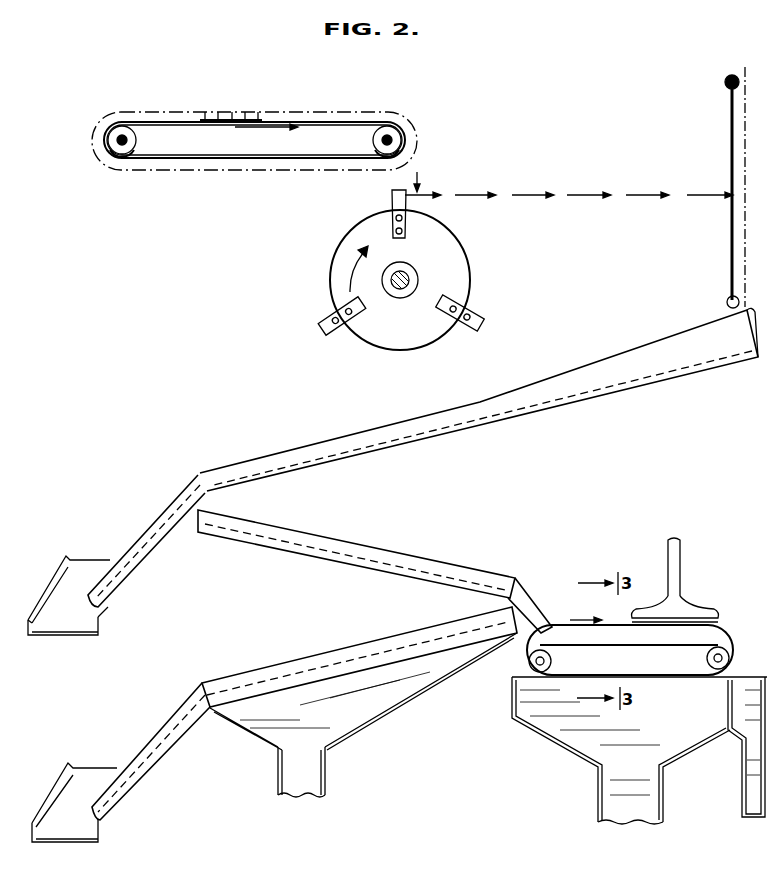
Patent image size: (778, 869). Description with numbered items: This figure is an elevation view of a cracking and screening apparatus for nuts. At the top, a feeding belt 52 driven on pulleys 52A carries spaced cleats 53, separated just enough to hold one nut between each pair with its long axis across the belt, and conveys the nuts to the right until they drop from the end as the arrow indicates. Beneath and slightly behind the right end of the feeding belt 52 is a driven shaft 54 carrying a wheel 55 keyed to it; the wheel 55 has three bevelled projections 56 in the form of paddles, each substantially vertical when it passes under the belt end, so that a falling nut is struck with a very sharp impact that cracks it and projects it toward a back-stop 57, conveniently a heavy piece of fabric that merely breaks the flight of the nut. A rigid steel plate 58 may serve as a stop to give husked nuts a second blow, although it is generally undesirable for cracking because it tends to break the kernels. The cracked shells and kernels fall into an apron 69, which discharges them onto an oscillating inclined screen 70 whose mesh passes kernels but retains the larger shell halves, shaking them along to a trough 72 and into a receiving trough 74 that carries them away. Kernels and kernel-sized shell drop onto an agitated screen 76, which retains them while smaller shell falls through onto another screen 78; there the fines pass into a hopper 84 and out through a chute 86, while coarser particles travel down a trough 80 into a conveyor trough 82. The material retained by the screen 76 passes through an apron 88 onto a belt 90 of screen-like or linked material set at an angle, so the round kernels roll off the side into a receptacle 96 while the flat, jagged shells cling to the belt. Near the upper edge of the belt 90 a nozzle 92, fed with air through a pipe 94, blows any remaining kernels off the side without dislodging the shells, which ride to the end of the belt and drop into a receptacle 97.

The feeding belt 52 is at (160, 167).
The pulleys 52A is at (136, 141).
The cleats 53 is at (258, 112).
The driven shaft 54 is at (412, 281).
The wheel 55 is at (466, 269).
The projections 56 is at (392, 207).
The back-stop 57 is at (730, 152).
The steel plate 58 is at (745, 67).
The apron 69 is at (617, 384).
The screen 70 is at (431, 437).
The trough 72 is at (146, 545).
The receiving trough 74 is at (108, 621).
The screen 76 is at (298, 554).
The screen 78 is at (273, 672).
The trough 80 is at (155, 752).
The conveyor trough 82 is at (108, 829).
The hopper 84 is at (366, 721).
The chute 86 is at (328, 794).
The apron 88 is at (528, 596).
The belt 90 is at (528, 661).
The nozzle 92 is at (693, 607).
The pipe 94 is at (681, 568).
The receptacle 96 is at (553, 739).
The receptacle 97 is at (738, 748).